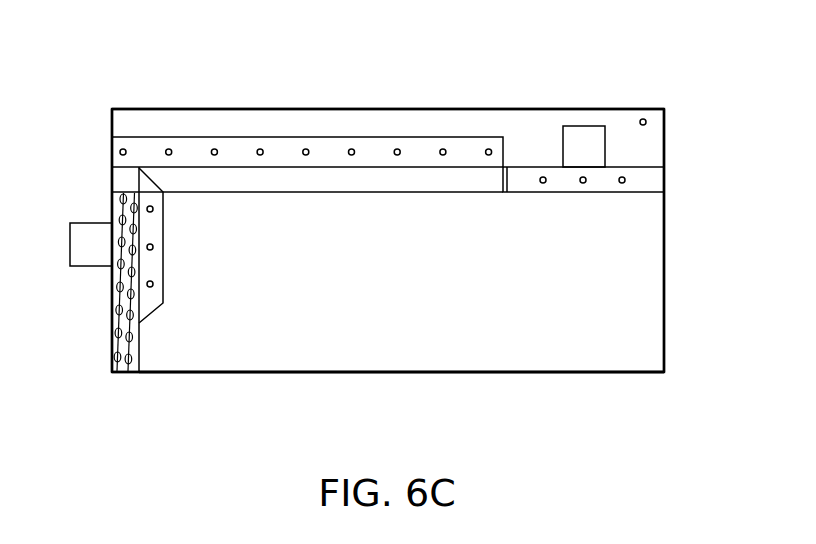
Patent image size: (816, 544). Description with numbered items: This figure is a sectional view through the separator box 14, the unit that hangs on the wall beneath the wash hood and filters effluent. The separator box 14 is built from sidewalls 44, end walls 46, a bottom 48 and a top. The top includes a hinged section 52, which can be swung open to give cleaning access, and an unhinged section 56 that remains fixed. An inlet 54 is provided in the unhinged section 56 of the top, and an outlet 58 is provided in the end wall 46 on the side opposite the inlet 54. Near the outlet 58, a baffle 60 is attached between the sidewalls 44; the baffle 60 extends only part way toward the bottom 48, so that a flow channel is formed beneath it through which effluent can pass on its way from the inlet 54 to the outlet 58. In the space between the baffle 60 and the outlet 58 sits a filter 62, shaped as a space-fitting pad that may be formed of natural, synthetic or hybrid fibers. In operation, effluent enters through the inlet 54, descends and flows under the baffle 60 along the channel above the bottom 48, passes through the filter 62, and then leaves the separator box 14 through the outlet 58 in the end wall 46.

The separator box 14 is at (722, 42).
The sidewalls 44 is at (426, 109).
The end walls 46 is at (665, 272).
The bottom 48 is at (200, 372).
The hinged section 52 is at (308, 137).
The inlet 54 is at (586, 126).
The unhinged section 56 is at (638, 167).
The outlet 58 is at (80, 223).
The baffle 60 is at (164, 243).
The filter 62 is at (116, 343).